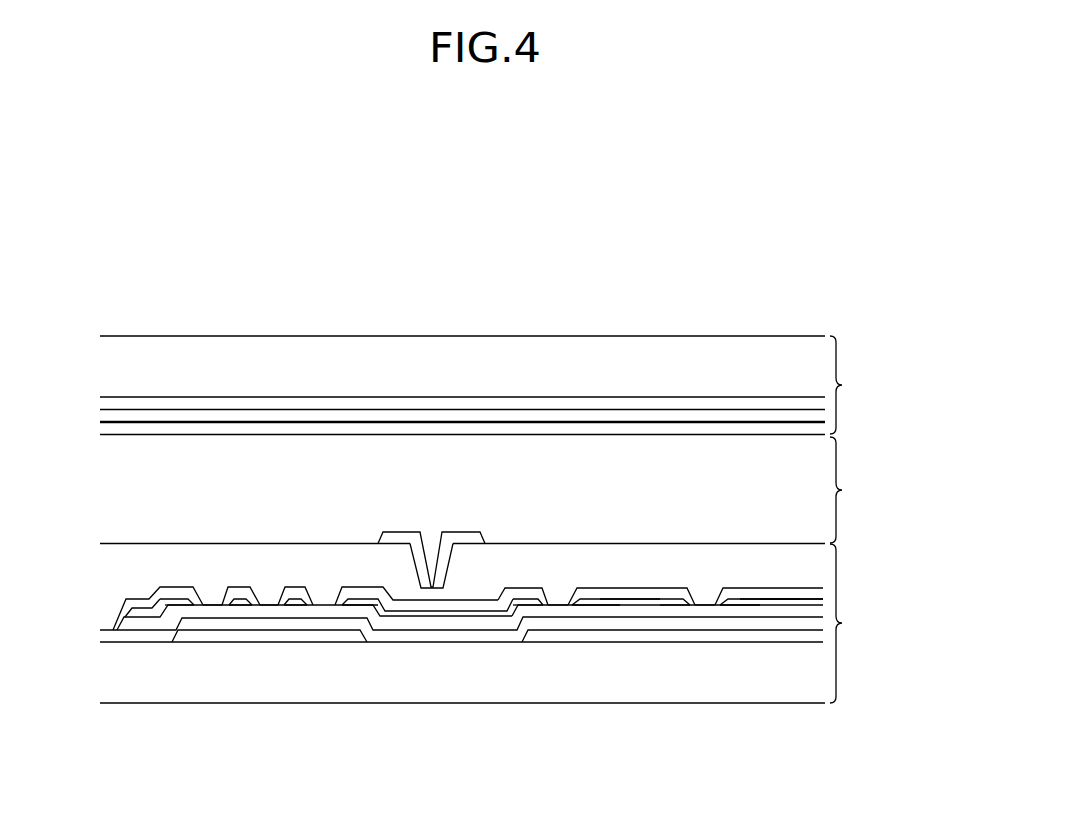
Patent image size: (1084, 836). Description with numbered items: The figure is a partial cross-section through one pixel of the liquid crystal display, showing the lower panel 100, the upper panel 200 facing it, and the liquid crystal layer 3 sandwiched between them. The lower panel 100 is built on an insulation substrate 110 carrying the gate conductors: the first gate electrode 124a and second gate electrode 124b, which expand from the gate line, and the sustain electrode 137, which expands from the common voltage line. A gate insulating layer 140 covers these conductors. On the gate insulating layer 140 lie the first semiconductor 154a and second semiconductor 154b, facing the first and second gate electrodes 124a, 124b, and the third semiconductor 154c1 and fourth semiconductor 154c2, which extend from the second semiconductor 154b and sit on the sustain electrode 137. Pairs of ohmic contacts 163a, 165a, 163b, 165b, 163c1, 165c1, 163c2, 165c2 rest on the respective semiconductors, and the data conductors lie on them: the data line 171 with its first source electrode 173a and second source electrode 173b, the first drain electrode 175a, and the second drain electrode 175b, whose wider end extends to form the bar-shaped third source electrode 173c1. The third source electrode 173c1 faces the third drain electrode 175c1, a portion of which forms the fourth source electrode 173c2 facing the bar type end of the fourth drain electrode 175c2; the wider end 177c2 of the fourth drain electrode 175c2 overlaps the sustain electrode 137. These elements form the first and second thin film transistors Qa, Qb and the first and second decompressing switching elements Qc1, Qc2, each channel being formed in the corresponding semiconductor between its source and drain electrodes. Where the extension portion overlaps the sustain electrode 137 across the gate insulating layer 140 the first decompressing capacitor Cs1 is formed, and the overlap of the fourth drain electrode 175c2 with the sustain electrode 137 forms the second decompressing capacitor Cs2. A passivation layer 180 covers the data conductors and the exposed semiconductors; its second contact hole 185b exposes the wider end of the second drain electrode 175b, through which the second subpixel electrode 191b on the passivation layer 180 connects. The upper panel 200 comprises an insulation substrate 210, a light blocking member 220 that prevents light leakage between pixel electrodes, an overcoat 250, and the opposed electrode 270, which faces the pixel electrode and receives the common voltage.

The insulation substrate 210 is at (201, 350).
The light blocking member 220 is at (268, 405).
The overcoat 250 is at (342, 418).
The opposed electrode 270 is at (405, 430).
The upper panel 200 is at (853, 385).
The liquid crystal layer 3 is at (846, 490).
The lower panel 100 is at (853, 623).
The insulation substrate 110 is at (800, 690).
The gate insulating layer 140 is at (435, 633).
The first gate electrode 124a is at (197, 637).
The second gate electrode 124b is at (347, 636).
The sustain electrode 137 is at (622, 637).
The first semiconductor 154a is at (218, 612).
The second semiconductor 154b is at (322, 610).
The third semiconductor 154c1 is at (554, 612).
The fourth semiconductor 154c2 is at (706, 610).
The data line 171 is at (137, 611).
The first source electrode 173a is at (178, 593).
The first drain electrode 175a is at (243, 600).
The second source electrode 173b is at (297, 597).
The second drain electrode 175b is at (362, 590).
The ohmic contact 163a is at (182, 605).
The ohmic contact 165a is at (243, 606).
The ohmic contact 163b is at (292, 606).
The ohmic contact 165b is at (357, 606).
The ohmic contact 163c1 is at (535, 606).
The ohmic contact 165c1 is at (585, 606).
The ohmic contact 163c2 is at (687, 606).
The ohmic contact 165c2 is at (735, 606).
The third source electrode 173c1 is at (514, 590).
The third drain electrode 175c1 is at (592, 592).
The fourth source electrode 173c2 is at (673, 592).
The fourth drain electrode 175c2 is at (743, 592).
The wider end 177c2 is at (805, 592).
The passivation layer 180 is at (123, 560).
The second contact hole 185b is at (430, 565).
The second subpixel electrode 191b is at (413, 537).
The first switching element Qa is at (210, 603).
The second switching element Qb is at (268, 603).
The first decompressing switching element Qc1 is at (557, 603).
The second decompressing switching element Qc2 is at (706, 603).
The first decompressing capacitor Cs1 is at (633, 586).
The second decompressing capacitor Cs2 is at (771, 586).